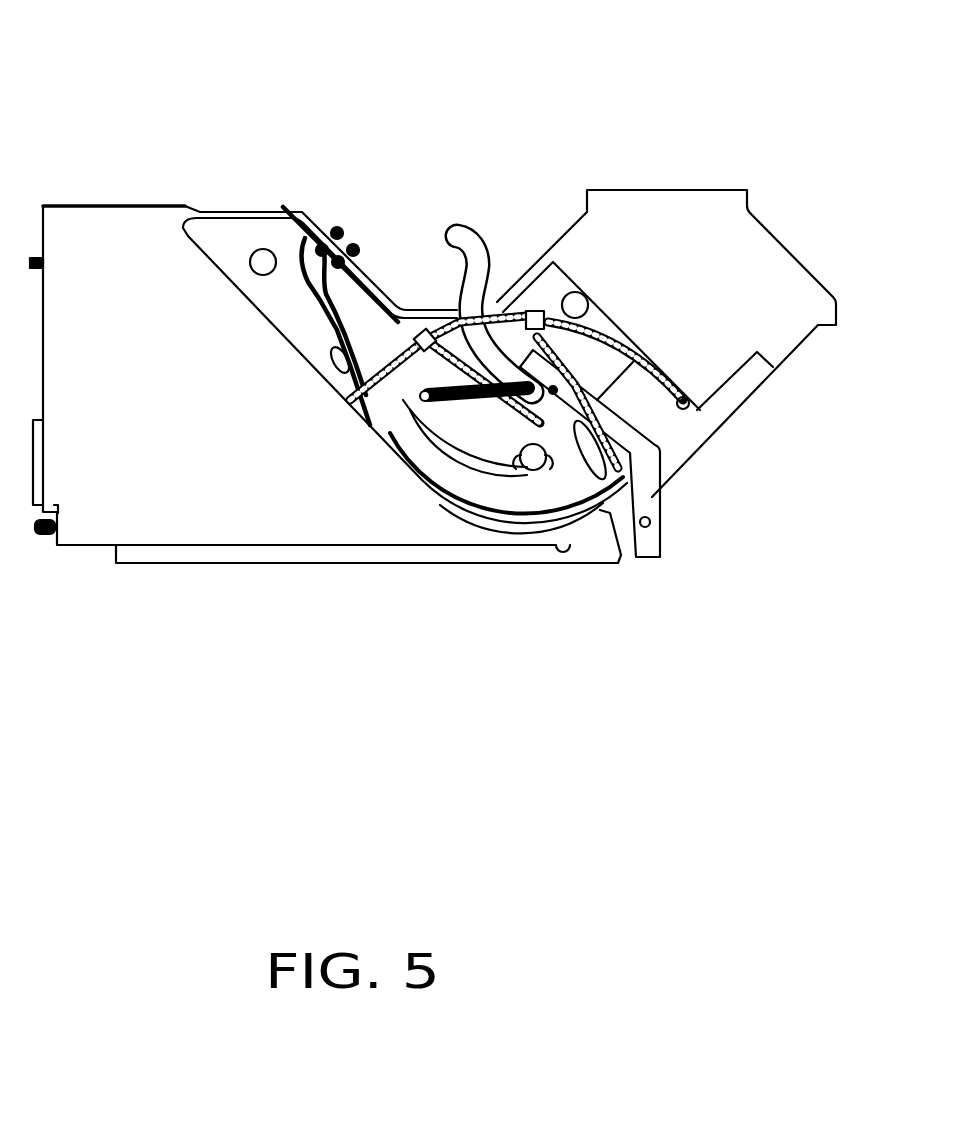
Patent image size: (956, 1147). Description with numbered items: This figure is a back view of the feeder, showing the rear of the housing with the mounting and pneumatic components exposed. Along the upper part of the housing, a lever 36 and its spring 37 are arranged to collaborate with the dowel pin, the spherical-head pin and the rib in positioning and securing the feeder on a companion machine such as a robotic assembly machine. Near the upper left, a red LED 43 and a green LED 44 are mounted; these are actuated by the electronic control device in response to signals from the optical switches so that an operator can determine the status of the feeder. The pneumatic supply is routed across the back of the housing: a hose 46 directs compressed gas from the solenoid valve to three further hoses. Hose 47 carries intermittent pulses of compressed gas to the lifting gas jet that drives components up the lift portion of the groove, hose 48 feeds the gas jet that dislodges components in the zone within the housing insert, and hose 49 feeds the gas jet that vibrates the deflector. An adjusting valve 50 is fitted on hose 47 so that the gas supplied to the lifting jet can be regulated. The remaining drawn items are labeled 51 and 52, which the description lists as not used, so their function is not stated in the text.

The lever 36 is at (470, 237).
The spring 37 is at (545, 318).
The red LED 43 is at (355, 246).
The green LED 44 is at (337, 233).
The hose 46 is at (423, 345).
The hose 47 is at (568, 440).
The hose 48 is at (630, 512).
The hose 49 is at (684, 410).
The adjusting valve 50 is at (538, 433).
The cable 51 is at (283, 207).
The cable sheath 52 is at (329, 355).